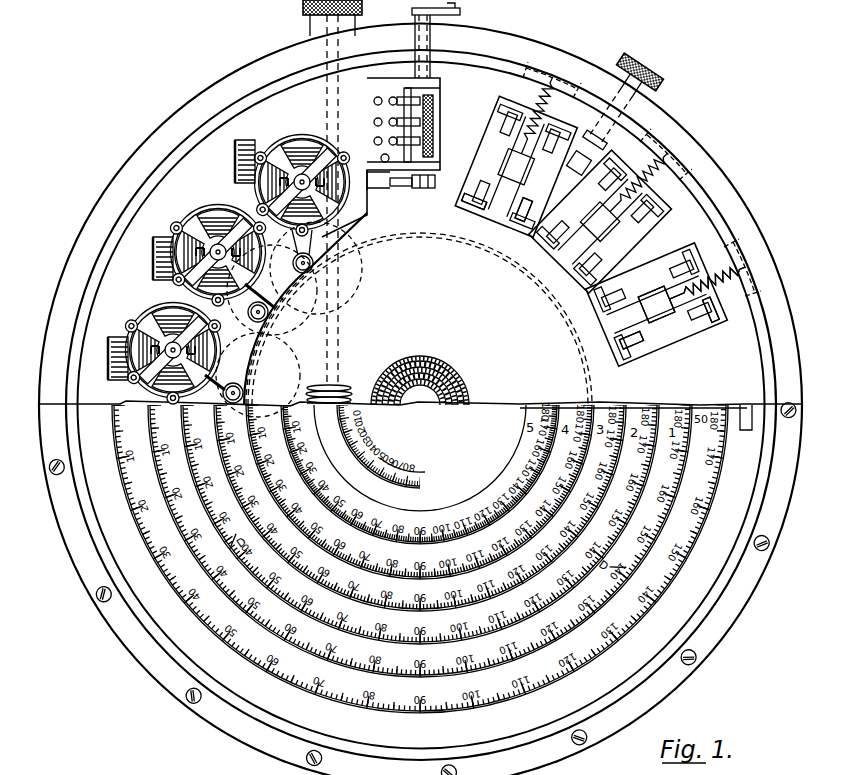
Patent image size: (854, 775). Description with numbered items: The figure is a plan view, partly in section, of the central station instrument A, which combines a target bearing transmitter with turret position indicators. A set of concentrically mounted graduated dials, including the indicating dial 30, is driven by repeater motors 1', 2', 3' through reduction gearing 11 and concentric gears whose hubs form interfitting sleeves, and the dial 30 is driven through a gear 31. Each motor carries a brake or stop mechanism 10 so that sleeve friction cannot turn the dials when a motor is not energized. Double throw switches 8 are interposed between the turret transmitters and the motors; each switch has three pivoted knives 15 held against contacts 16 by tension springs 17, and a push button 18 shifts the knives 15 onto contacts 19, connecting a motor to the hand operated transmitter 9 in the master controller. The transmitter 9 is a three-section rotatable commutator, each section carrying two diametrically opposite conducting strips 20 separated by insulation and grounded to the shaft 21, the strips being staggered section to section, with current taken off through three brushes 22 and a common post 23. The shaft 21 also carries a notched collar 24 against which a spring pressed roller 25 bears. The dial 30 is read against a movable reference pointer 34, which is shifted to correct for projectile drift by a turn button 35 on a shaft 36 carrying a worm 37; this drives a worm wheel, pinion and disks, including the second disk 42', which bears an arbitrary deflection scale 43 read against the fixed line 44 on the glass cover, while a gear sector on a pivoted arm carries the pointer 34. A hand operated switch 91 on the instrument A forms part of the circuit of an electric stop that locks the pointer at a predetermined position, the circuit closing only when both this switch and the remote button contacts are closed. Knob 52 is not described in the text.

The central station instrument A is at (136, 159).
The turn button 35 is at (303, 12).
The knob plate 52 is at (460, 10).
The shaft 21 is at (430, 72).
The brushes 22 is at (385, 114).
The conducting strips 20 is at (420, 101).
The hand operated transmitter 9 is at (433, 125).
The common post 23 is at (379, 158).
The spring pressed roller 25 is at (399, 186).
The notched collar 24 is at (424, 188).
The repeater motor 3' is at (293, 178).
The repeater motor 2' is at (218, 251).
The repeater motor 1' is at (165, 347).
The brake or stop mechanism 10 is at (155, 258).
The reduction gearing 11 is at (350, 241).
The gear 31 is at (420, 319).
The shaft 36 is at (338, 336).
The worm 37 is at (343, 386).
The double throw switches 8 is at (502, 137).
The contacts 16 is at (562, 130).
The contacts 19 is at (557, 283).
The hand operated switch 91 is at (601, 139).
The push button 18 is at (672, 152).
The tension springs 17 is at (720, 268).
The pivoted knives 15 is at (650, 290).
The line 44 is at (369, 446).
The second disk 42' is at (420, 458).
The deflection scale 43 is at (380, 458).
The movable reference pointer 34 is at (753, 418).
The indicating dial 30 is at (420, 559).